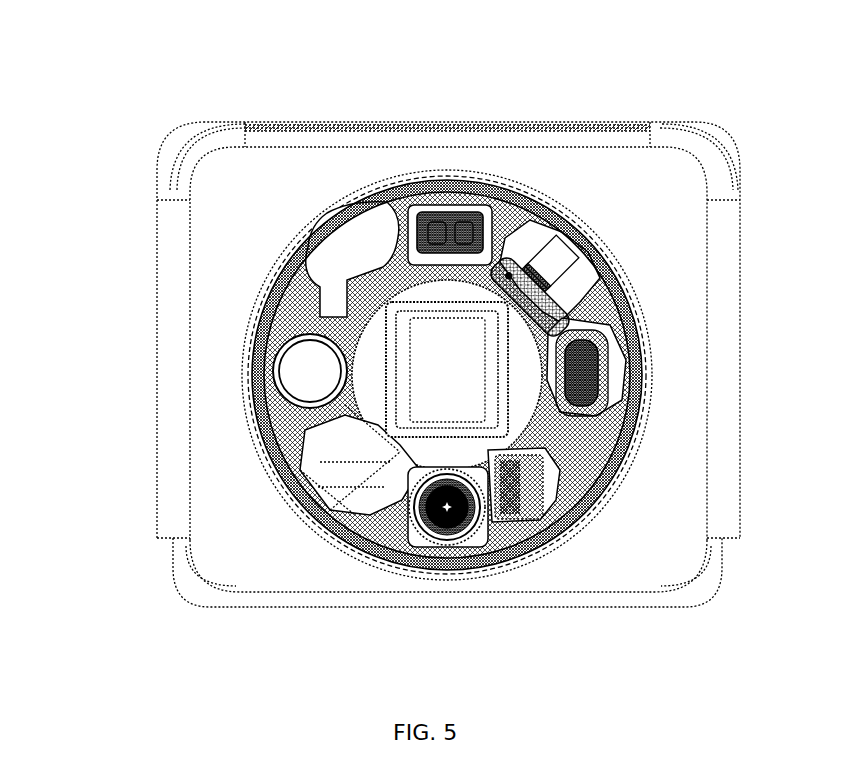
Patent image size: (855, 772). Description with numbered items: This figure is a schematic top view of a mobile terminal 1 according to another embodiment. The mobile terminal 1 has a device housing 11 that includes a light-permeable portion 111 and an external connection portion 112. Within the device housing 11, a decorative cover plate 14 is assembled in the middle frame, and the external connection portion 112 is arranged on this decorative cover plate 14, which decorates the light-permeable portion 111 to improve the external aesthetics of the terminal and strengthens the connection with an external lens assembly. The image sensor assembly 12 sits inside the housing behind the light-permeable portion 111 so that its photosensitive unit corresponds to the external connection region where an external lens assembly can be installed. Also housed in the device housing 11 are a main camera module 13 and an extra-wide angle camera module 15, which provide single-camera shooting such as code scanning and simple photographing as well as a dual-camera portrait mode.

The mobile terminal 1 is at (419, 317).
The device housing 11 is at (268, 128).
The light-permeable portion 111 is at (465, 300).
The external connection portion 112 is at (280, 484).
The image sensor assembly 12 is at (437, 255).
The main camera module 13 is at (320, 372).
The decorative cover plate 14 is at (513, 178).
The extra-wide angle camera module 15 is at (421, 502).